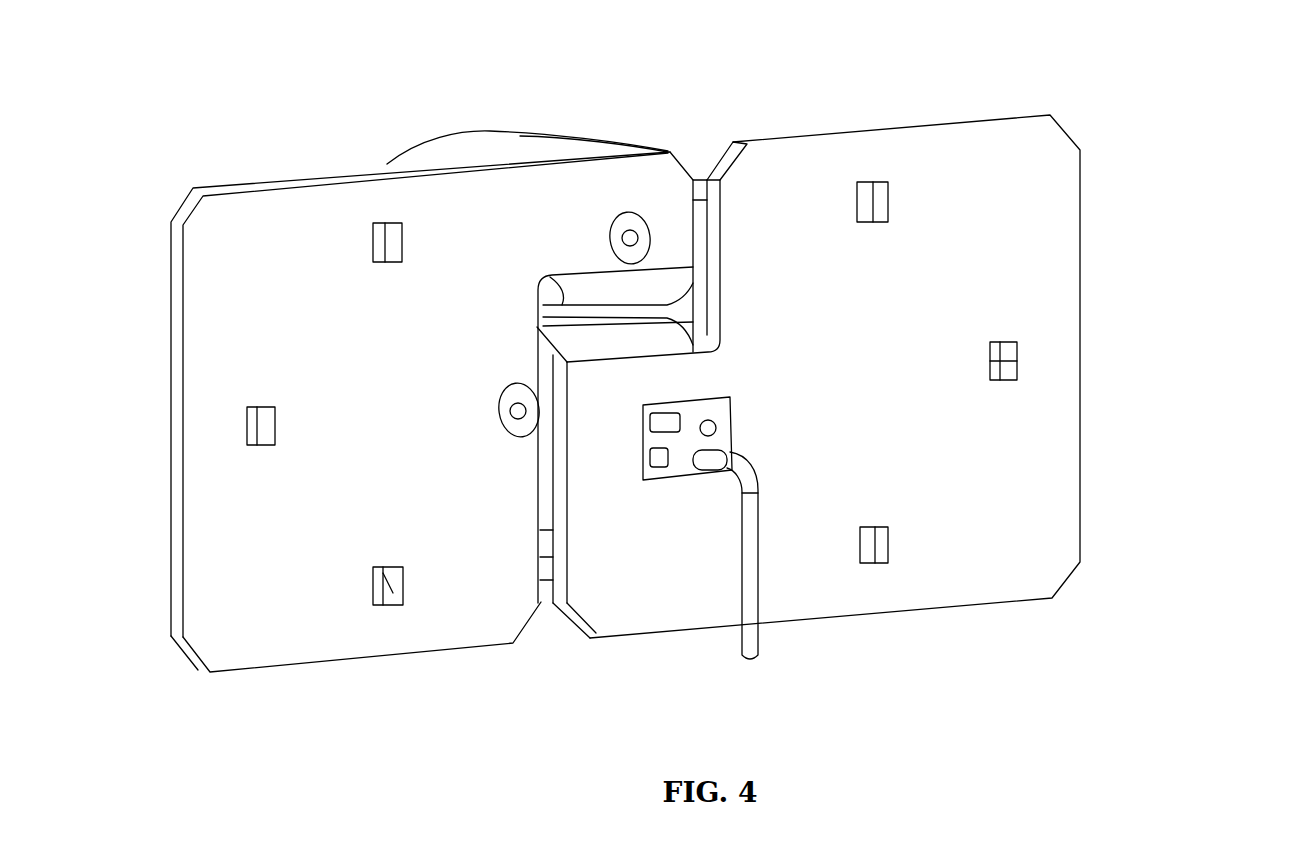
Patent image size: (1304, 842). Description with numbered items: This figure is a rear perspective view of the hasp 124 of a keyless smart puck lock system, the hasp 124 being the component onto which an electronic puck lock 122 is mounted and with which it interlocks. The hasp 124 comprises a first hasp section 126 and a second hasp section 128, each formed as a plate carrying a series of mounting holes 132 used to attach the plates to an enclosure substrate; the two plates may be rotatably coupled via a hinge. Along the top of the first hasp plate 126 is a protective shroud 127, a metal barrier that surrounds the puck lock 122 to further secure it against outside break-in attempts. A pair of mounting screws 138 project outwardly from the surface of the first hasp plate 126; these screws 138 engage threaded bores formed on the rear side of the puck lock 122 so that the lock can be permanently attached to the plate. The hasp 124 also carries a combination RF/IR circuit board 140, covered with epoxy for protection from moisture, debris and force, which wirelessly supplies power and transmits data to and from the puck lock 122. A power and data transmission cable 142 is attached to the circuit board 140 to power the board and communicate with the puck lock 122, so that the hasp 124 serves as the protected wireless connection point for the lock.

The electronic puck lock 122 is at (553, 513).
The hasp 124 is at (1118, 150).
The first hasp section 126 is at (252, 200).
The protective shroud 127 is at (540, 143).
The second hasp section 128 is at (990, 153).
The mounting holes 132 is at (398, 238).
The mounting screws 138 is at (633, 234).
The RF/IR circuit board 140 is at (712, 405).
The power and data transmission cable 142 is at (750, 522).